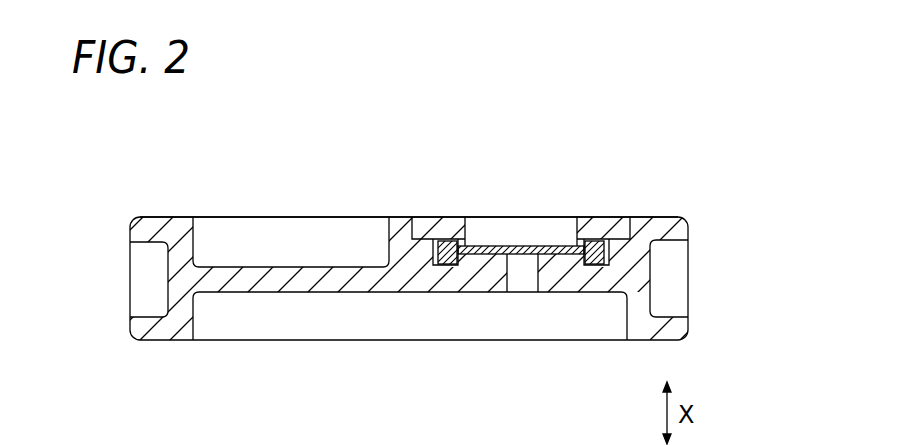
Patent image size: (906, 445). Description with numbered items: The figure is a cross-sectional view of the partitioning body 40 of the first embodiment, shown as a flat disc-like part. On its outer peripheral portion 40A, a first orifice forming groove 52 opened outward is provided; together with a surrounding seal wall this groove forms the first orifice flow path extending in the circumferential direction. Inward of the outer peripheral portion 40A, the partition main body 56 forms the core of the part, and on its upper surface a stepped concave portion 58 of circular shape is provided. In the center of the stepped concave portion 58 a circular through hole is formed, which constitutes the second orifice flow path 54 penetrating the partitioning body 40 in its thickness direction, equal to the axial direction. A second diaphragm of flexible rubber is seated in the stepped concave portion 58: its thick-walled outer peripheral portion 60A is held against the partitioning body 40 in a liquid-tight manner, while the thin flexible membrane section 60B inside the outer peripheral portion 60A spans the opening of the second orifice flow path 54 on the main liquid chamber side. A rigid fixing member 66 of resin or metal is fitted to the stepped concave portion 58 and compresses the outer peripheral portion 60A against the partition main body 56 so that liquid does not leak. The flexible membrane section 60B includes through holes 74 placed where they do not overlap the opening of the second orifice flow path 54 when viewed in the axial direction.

The partitioning body 40 is at (407, 161).
The outer peripheral portion 40A is at (162, 217).
The first orifice forming groove 52 is at (148, 248).
The partition main body 56 is at (280, 283).
The stepped concave portion 58 is at (450, 262).
The second orifice flow path 54 is at (521, 275).
The flexible membrane section 60B is at (516, 225).
The through hole 74 is at (560, 243).
The fixing member 66 is at (600, 232).
The outer peripheral portion 60A is at (607, 253).